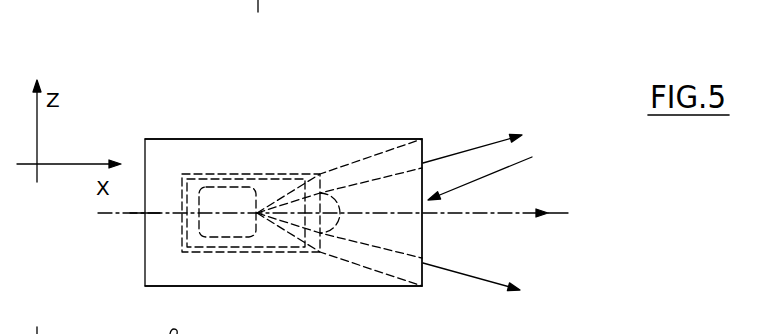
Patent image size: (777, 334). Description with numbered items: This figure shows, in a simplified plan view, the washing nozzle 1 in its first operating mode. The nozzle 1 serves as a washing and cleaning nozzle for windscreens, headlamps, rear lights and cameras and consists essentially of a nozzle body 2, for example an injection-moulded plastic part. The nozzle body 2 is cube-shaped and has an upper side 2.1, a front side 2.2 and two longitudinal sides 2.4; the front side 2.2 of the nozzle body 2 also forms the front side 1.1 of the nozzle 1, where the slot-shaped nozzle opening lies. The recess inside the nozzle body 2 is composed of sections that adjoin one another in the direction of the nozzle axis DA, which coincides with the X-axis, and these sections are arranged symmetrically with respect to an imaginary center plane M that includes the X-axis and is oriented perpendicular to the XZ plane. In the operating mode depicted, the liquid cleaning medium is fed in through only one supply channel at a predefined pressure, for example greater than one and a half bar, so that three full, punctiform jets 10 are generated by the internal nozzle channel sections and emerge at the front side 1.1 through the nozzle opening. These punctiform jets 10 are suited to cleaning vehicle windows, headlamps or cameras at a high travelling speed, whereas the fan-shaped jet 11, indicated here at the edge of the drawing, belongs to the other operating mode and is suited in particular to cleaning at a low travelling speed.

The nozzle 1 is at (448, 101).
The front side of the nozzle 1.1 is at (497, 171).
The nozzle body 2 is at (358, 134).
The upper side 2.1 is at (312, 155).
The front side 2.2 is at (425, 263).
The longitudinal sides 2.4 is at (225, 139).
The full jets 10 is at (455, 153).
The fan-shaped jet 11 is at (522, 333).
The center plane M is at (138, 213).
The nozzle axis DA is at (352, 214).